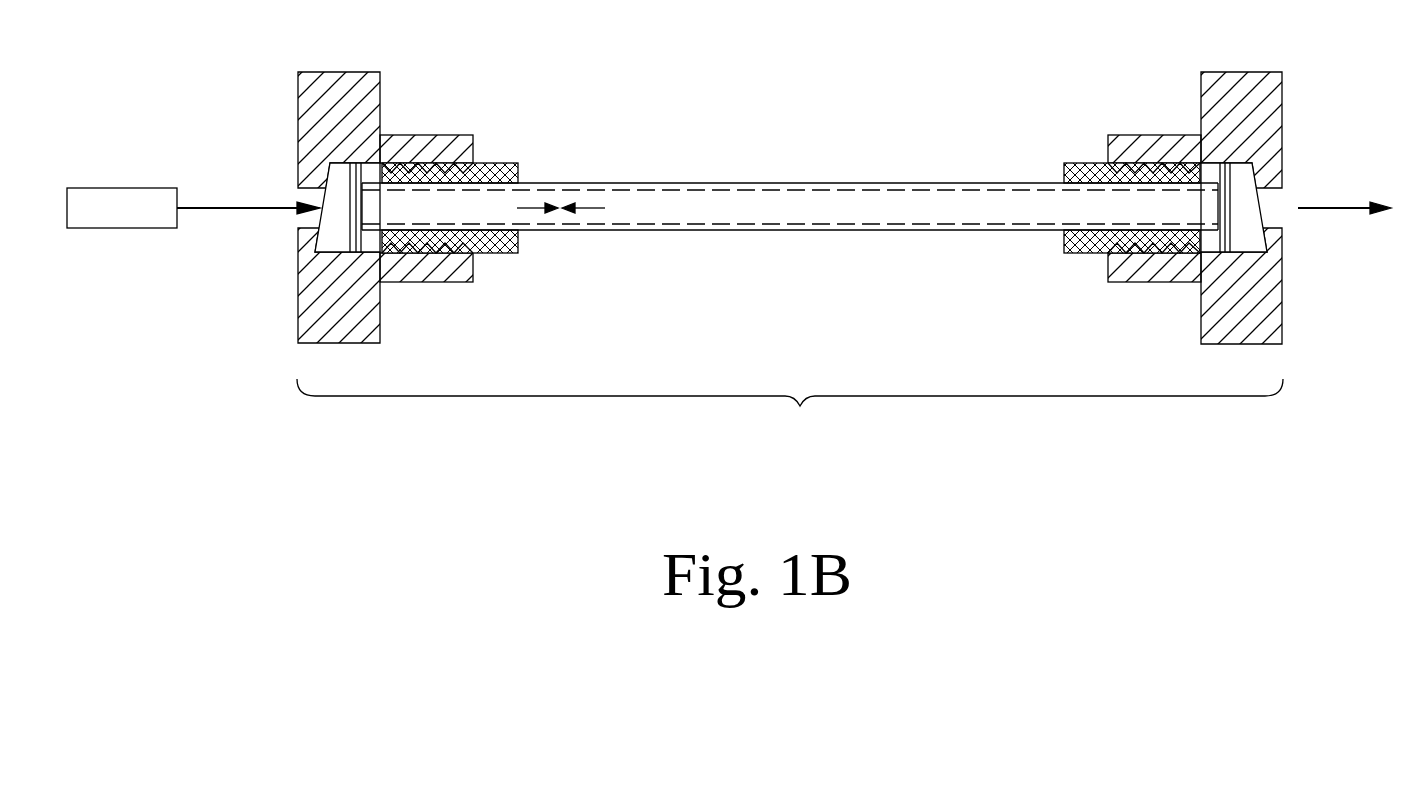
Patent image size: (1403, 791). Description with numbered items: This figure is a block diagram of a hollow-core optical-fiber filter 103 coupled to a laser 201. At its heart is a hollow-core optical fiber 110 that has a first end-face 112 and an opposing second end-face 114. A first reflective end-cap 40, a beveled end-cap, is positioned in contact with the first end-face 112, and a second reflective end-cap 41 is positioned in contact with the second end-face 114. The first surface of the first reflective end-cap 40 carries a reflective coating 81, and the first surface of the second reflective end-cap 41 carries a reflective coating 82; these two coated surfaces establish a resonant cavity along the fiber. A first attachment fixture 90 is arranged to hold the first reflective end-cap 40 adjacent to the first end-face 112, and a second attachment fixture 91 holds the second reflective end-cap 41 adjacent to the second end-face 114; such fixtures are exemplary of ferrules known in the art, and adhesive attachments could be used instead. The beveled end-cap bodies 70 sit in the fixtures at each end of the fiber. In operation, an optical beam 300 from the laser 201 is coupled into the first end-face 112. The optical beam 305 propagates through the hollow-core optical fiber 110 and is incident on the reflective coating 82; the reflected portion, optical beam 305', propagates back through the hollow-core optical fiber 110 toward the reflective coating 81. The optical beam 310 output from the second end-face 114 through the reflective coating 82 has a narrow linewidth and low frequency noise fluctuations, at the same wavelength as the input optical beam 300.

The hollow-core optical-fiber filter 103 is at (790, 411).
The laser 201 is at (105, 205).
The optical beam 300 is at (210, 206).
The optical beam 310 is at (1330, 207).
The reflective coating 81 is at (363, 146).
The reflective coating 82 is at (1219, 146).
The first attachment fixture 90 is at (497, 162).
The second attachment fixture 91 is at (1092, 162).
The optical window 70 is at (313, 199).
The hollow-core optical fiber 110 is at (790, 206).
The first end-face 112 is at (365, 186).
The second end-face 114 is at (1217, 227).
The optical beam 305 is at (543, 247).
The optical beam 305' is at (603, 247).
The first reflective end-cap 40 is at (297, 218).
The second reflective end-cap 41 is at (1280, 216).